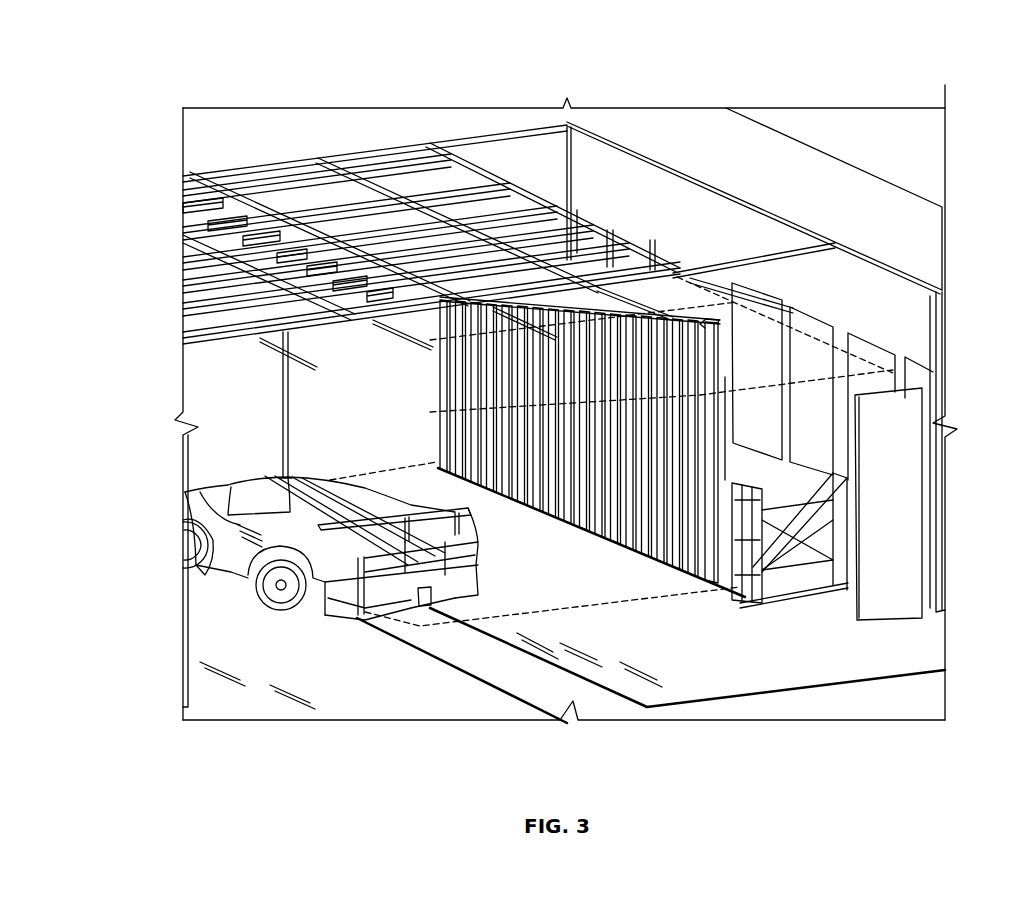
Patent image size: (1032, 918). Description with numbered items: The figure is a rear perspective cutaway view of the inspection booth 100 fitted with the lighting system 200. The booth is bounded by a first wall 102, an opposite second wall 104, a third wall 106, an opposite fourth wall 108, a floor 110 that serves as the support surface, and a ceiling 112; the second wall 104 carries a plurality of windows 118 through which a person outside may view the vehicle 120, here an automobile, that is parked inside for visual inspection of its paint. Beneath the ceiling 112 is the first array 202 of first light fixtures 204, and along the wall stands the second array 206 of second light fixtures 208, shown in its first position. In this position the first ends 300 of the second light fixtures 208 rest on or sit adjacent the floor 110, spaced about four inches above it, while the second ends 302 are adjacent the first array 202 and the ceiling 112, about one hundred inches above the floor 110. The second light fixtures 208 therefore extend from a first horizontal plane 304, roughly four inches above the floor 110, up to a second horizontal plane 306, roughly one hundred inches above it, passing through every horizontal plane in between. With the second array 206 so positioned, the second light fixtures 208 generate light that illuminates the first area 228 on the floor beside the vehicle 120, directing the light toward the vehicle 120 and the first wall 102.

The inspection booth 100 is at (713, 128).
The first wall 102 is at (186, 678).
The second wall 104 is at (915, 310).
The third wall 106 is at (560, 150).
The fourth wall 108 is at (858, 483).
The floor 110 is at (303, 681).
The ceiling 112 is at (790, 170).
The windows 118 is at (583, 227).
The vehicle 120 is at (237, 587).
The lighting system 200 is at (233, 182).
The first array 202 is at (194, 189).
The first light fixtures 204 is at (303, 210).
The second array 206 is at (426, 397).
The second light fixtures 208 is at (447, 447).
The first area 228 is at (417, 630).
The first ends 300 is at (712, 600).
The second ends 302 is at (712, 320).
The first horizontal plane 304 is at (487, 618).
The second horizontal plane 306 is at (870, 375).